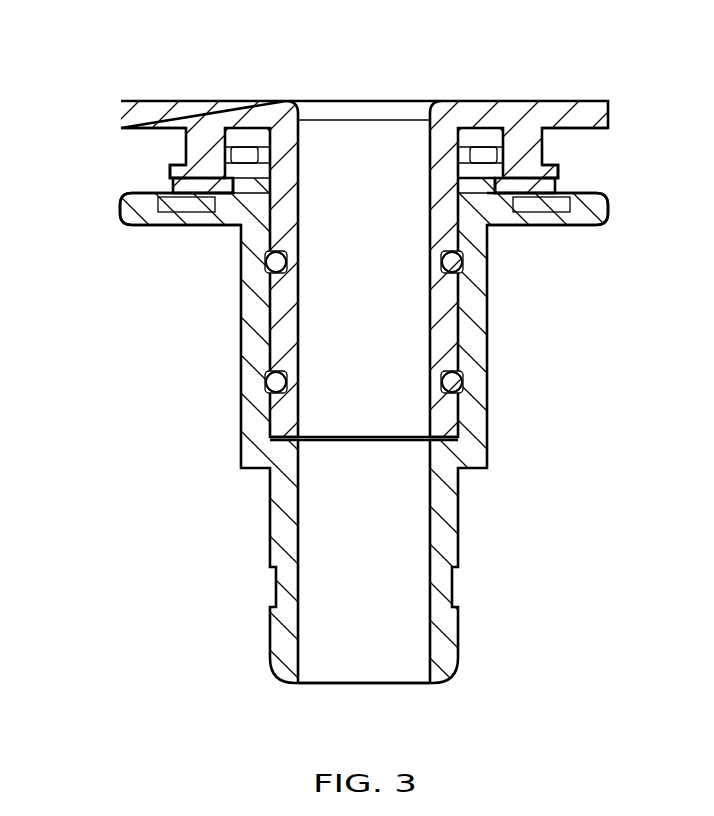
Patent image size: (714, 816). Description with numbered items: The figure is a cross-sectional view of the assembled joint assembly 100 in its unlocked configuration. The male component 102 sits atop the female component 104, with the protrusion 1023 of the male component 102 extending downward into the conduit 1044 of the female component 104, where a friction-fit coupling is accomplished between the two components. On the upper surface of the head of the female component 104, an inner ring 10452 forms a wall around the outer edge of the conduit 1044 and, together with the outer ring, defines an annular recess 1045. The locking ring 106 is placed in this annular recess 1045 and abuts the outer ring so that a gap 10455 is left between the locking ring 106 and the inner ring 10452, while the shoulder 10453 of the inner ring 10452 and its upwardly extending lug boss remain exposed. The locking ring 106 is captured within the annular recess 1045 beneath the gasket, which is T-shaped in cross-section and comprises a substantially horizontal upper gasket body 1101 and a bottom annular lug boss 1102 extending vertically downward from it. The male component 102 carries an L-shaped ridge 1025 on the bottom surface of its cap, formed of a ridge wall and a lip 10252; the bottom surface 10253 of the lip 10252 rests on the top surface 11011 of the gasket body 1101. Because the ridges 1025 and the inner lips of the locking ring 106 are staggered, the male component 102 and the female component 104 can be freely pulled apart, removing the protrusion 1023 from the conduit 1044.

The joint assembly 100 is at (347, 380).
The male component 102 is at (347, 226).
The ridge 1025 is at (118, 138).
The lip 10252 is at (183, 157).
The bottom surface of the lip 10253 is at (173, 186).
The shoulder 10453 is at (265, 180).
The inner ring 10452 is at (252, 196).
The upper gasket body 1101 is at (550, 187).
The locking ring 106 is at (574, 203).
The top surface of the gasket body 11011 is at (167, 210).
The bottom annular lug boss 1102 is at (530, 202).
The annular recess 1045 is at (195, 228).
The gap 10455 is at (508, 228).
The protrusion 1023 is at (283, 325).
The female component 104 is at (360, 461).
The conduit 1044 is at (327, 645).